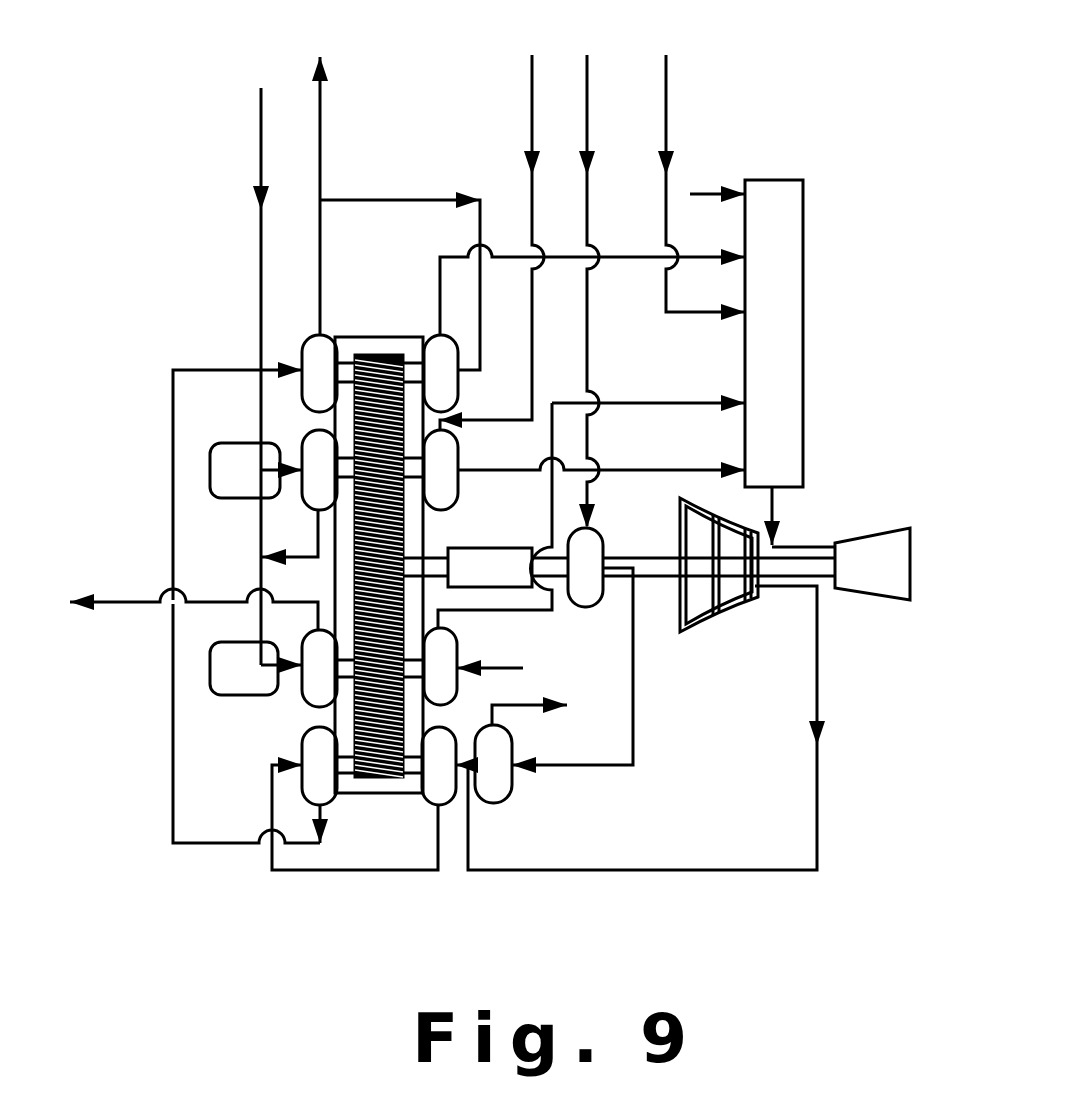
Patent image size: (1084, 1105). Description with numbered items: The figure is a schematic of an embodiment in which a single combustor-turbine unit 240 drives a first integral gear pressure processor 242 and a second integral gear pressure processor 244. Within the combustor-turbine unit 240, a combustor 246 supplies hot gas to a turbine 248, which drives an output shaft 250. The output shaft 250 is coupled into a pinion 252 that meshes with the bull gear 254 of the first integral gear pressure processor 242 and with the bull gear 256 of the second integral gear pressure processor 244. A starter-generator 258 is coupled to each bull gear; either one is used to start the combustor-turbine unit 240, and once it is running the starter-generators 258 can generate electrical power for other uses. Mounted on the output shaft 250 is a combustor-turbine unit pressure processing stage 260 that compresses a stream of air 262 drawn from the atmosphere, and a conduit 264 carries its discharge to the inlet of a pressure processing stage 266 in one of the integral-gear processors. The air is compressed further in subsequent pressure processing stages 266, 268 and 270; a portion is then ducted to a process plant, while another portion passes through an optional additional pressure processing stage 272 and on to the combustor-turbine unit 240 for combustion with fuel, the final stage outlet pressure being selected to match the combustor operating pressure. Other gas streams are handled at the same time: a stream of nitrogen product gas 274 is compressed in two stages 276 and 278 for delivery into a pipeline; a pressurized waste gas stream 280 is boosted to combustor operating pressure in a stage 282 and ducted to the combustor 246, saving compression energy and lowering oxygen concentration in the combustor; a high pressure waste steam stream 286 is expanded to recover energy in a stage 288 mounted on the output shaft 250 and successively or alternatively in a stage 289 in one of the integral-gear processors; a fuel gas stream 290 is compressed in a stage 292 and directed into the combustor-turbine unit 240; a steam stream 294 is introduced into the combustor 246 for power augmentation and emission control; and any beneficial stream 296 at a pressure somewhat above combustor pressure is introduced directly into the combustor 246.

The combustor-turbine unit 240 is at (828, 530).
The first integral gear pressure processor 242 is at (165, 700).
The second integral gear pressure processor 244 is at (162, 455).
The combustor 246 is at (798, 277).
The turbine 248 is at (896, 603).
The output shaft 250 is at (831, 581).
The pinion 252 is at (403, 543).
The bull gear 254 is at (355, 612).
The bull gear 256 is at (355, 525).
The starter-generator 258 is at (225, 498).
The combustor-turbine unit pressure processing stage 260 is at (712, 612).
The stream of air 262 is at (675, 517).
The conduit 264 is at (818, 833).
The pressure processing stage 266 is at (430, 805).
The pressure processing stage 268 is at (305, 797).
The pressure processing stage 270 is at (306, 337).
The additional pressure processing stage 272 is at (432, 337).
The stream of nitrogen product gas 274 is at (261, 157).
The stage 276 is at (308, 432).
The stage 278 is at (317, 698).
The pressurized waste gas stream 280 is at (532, 100).
The stage 282 is at (448, 456).
The high pressure waste steam stream 286 is at (587, 103).
The stage 288 is at (595, 607).
The stage 289 is at (502, 802).
The fuel gas stream 290 is at (517, 700).
The stage 292 is at (457, 655).
The steam stream 294 is at (700, 193).
The beneficial stream 296 is at (667, 143).